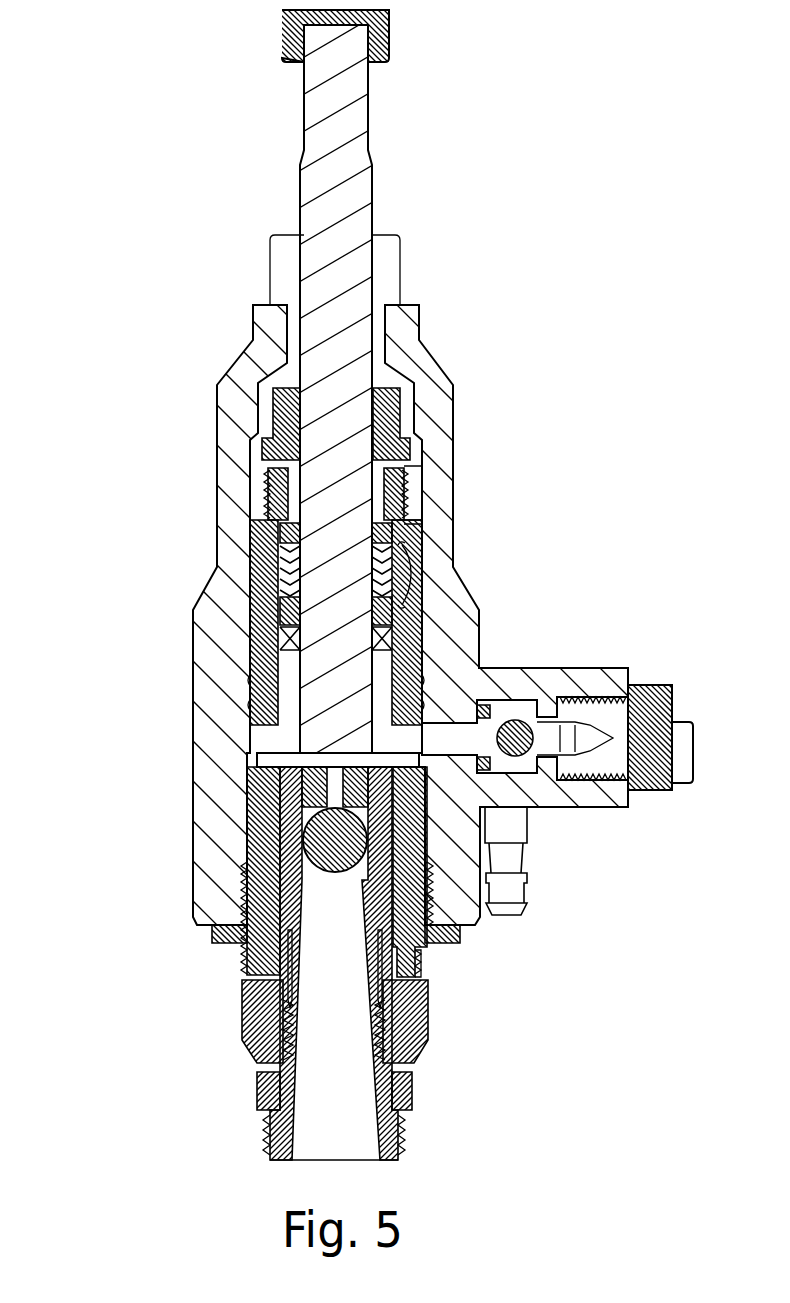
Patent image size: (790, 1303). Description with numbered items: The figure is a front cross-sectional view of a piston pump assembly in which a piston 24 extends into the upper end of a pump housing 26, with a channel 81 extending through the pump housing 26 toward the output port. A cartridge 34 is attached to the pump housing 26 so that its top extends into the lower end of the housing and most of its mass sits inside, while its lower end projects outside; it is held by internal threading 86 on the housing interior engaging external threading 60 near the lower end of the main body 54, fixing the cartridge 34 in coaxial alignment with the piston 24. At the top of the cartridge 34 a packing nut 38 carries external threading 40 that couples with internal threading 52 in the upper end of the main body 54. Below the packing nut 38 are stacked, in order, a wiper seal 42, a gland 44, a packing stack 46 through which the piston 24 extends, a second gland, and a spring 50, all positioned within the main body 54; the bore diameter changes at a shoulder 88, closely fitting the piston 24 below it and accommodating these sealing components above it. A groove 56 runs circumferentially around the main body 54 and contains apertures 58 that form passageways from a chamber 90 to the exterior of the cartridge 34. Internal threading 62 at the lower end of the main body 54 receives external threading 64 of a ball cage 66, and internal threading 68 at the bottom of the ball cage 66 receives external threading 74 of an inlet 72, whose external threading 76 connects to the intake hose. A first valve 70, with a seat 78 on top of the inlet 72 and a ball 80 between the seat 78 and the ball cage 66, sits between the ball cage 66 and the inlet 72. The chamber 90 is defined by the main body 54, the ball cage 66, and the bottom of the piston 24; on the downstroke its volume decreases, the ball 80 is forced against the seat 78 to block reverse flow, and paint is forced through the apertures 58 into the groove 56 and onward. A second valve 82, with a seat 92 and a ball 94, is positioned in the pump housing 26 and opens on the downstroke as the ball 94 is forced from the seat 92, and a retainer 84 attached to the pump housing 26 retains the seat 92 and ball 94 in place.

The piston 24 is at (355, 130).
The pump housing 26 is at (210, 716).
The cartridge 34 is at (158, 1026).
The packing nut 38 is at (395, 441).
The external threading 40 is at (420, 488).
The wiper seal 42 is at (293, 498).
The gland 44 is at (423, 533).
The packing stack 46 is at (413, 577).
The spring 50 is at (283, 632).
The internal threading 52 is at (420, 507).
The main body 54 is at (243, 943).
The groove 56 is at (262, 760).
The apertures 58 is at (265, 690).
The external threading 60 is at (430, 925).
The internal threading 62 is at (417, 947).
The external threading 64 is at (415, 963).
The ball cage 66 is at (252, 1050).
The internal threading 68 is at (430, 1007).
The first valve 70 is at (290, 863).
The inlet 72 is at (405, 730).
The external threading 74 is at (390, 1033).
The external threading 76 is at (398, 1143).
The seat 78 is at (245, 1025).
The ball 80 is at (335, 843).
The channel 81 is at (452, 740).
The second valve 82 is at (560, 632).
The retainer 84 is at (645, 693).
The internal threading 86 is at (433, 873).
The shoulder 88 is at (285, 660).
The chamber 90 is at (325, 765).
The seat 92 is at (493, 717).
The ball 94 is at (522, 720).